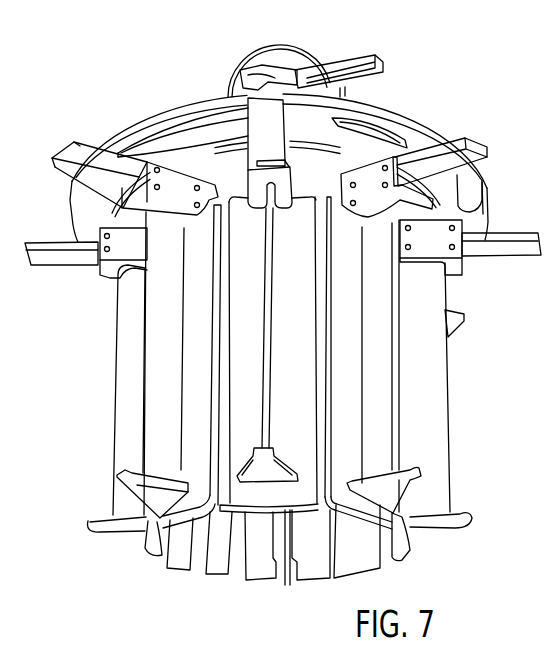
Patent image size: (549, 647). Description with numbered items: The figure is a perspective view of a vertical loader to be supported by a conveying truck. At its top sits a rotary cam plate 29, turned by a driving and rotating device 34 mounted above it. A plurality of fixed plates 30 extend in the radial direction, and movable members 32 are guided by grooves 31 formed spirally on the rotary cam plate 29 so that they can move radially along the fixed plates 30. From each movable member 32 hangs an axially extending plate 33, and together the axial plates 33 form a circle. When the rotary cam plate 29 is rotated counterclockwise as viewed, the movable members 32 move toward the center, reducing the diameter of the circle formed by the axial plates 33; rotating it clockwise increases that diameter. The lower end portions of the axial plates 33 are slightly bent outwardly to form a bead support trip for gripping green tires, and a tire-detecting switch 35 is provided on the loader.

The rotary cam plate 29 is at (123, 131).
The fixed plates 30 is at (230, 96).
The grooves 31 is at (150, 147).
The movable members 32 is at (186, 199).
The axially extending plates 33 is at (303, 423).
The driving and rotating device 34 is at (303, 47).
The tire-detecting switch 35 is at (288, 582).